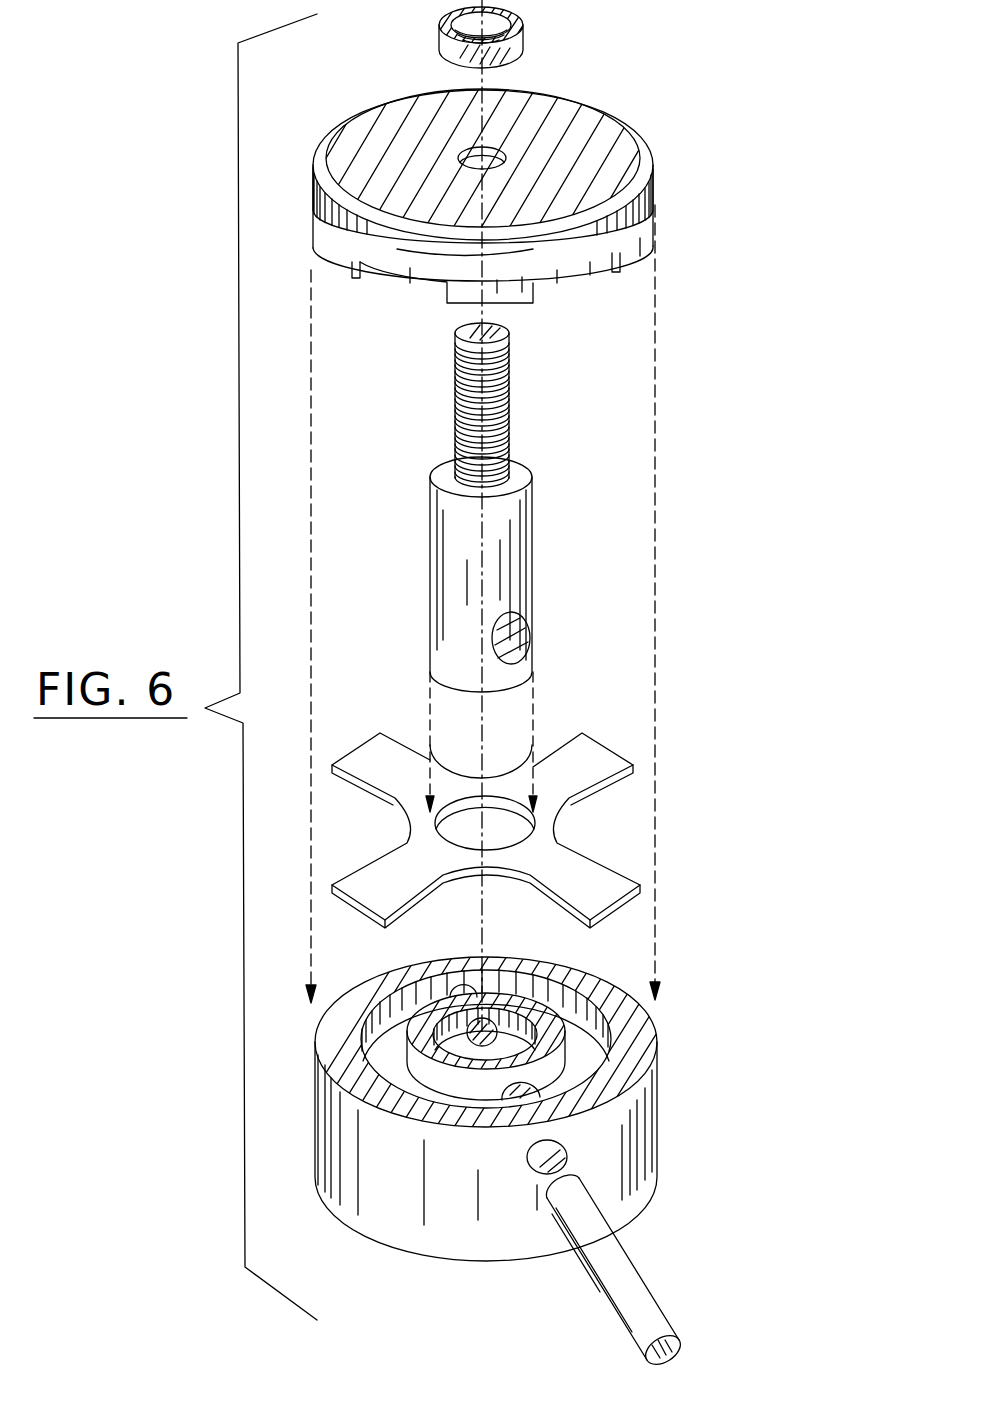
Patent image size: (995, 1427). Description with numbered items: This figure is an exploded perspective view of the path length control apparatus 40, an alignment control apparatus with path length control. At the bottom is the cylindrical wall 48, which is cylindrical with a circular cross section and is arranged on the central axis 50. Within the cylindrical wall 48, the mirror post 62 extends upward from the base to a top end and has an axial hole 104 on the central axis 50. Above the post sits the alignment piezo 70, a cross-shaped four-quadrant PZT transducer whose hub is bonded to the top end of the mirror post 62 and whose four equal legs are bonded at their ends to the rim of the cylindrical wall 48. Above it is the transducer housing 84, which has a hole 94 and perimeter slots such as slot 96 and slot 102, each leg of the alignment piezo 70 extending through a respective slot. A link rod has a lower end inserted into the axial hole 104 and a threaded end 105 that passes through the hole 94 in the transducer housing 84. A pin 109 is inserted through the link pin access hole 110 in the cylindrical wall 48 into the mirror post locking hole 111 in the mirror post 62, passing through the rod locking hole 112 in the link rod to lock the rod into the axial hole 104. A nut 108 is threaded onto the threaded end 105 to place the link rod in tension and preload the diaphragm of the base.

The path length control apparatus 40 is at (600, 495).
The cylindrical wall 48 is at (493, 1231).
The central axis 50 is at (486, 730).
The mirror post 62 is at (495, 1086).
The alignment piezo 70 is at (587, 755).
The transducer housing 84 is at (648, 205).
The hole 94 is at (466, 143).
The perimeter slot 96 is at (577, 268).
The perimeter slot 102 is at (396, 277).
The axial hole 104 is at (503, 1022).
The threaded end 105 is at (483, 403).
The nut 108 is at (522, 22).
The pin 109 is at (617, 1270).
The link pin access hole 110 is at (530, 1146).
The mirror post locking hole 111 is at (505, 1086).
The rod locking hole 112 is at (528, 643).